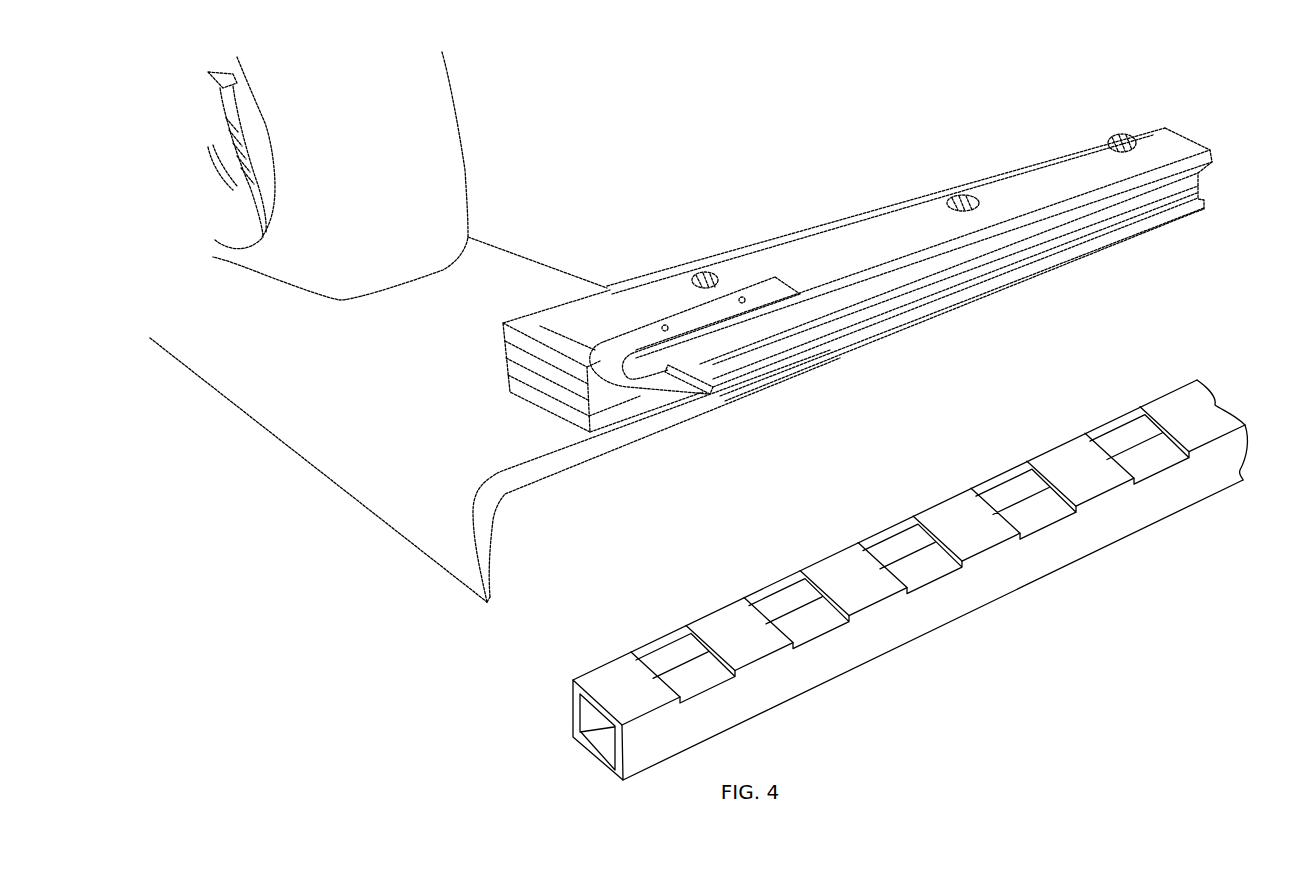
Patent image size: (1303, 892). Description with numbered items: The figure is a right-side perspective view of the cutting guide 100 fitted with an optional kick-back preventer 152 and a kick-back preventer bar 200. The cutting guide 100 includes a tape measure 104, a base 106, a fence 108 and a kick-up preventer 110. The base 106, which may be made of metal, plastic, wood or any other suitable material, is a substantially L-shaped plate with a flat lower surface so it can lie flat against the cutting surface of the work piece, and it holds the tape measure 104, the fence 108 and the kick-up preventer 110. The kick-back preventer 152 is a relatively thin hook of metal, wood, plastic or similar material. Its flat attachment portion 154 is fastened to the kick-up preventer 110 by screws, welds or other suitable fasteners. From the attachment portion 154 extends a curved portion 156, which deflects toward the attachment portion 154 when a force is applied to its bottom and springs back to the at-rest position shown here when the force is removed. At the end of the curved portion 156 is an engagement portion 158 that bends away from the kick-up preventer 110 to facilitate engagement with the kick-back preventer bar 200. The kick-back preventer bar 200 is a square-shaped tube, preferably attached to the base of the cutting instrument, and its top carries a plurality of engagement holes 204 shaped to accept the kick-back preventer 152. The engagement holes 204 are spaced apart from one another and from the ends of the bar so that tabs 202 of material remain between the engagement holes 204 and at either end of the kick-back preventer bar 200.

The cutting guide 100 is at (690, 81).
The tape measure 104 is at (452, 64).
The base 106 is at (517, 259).
The fence 108 is at (512, 314).
The kick-up preventer 110 is at (882, 244).
The kick-back preventer 152 is at (680, 303).
The attachment portion 154 is at (648, 325).
The curved portion 156 is at (647, 392).
The engagement portion 158 is at (705, 395).
The kick-back preventer bar 200 is at (1225, 357).
The tabs 202 is at (617, 680).
The engagement holes 204 is at (690, 679).